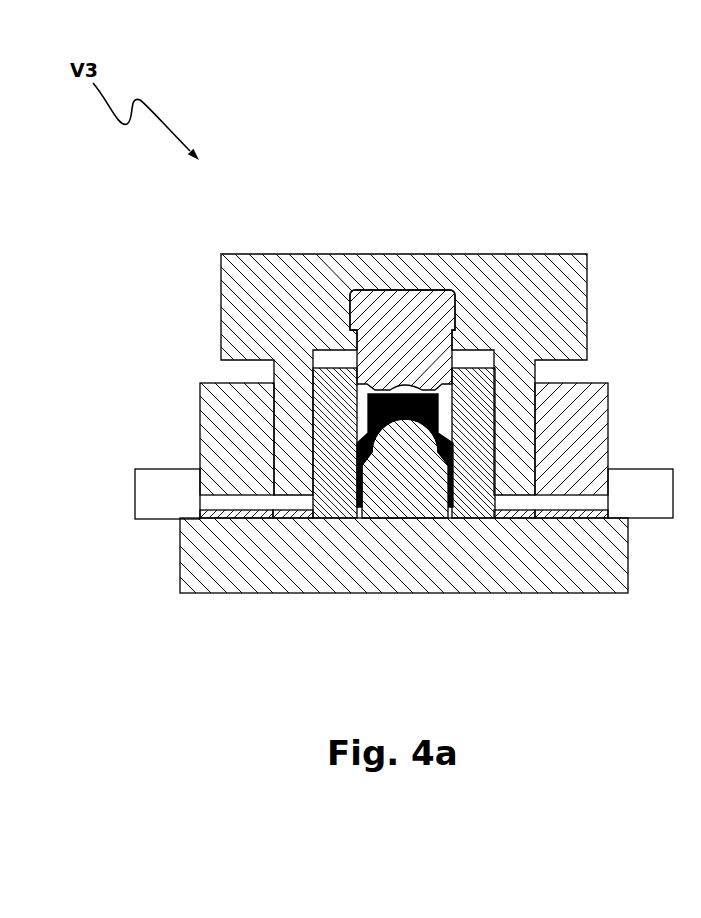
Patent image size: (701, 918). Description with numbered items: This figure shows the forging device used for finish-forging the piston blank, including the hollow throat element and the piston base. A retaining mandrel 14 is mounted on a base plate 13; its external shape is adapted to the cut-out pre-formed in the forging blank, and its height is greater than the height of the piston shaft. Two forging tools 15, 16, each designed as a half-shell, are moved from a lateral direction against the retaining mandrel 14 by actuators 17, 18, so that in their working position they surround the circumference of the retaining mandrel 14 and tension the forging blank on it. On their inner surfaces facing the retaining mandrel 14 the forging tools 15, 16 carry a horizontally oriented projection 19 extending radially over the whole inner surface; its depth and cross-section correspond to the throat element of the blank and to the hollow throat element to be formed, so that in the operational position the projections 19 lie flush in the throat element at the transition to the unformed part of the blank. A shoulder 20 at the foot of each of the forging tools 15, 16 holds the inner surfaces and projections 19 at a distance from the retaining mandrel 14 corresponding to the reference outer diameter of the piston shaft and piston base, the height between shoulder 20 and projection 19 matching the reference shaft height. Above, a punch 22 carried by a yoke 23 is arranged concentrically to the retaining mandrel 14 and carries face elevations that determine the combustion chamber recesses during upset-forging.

The base plate 13 is at (385, 565).
The retaining mandrel 14 is at (408, 483).
The forging tool 15 is at (333, 413).
The forging tool 16 is at (490, 410).
The actuator 17 is at (154, 504).
The actuator 18 is at (627, 504).
The projection 19 is at (357, 433).
The shoulder 20 is at (360, 517).
The punch 22 is at (412, 332).
The yoke 23 is at (360, 385).